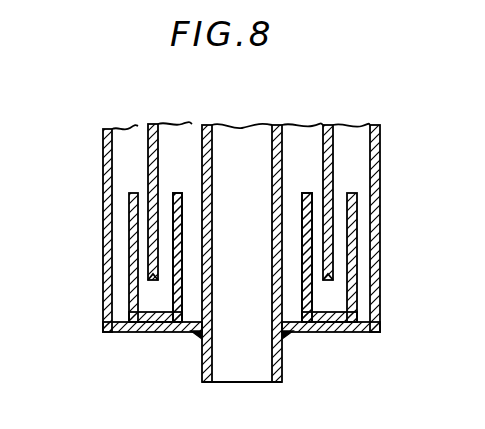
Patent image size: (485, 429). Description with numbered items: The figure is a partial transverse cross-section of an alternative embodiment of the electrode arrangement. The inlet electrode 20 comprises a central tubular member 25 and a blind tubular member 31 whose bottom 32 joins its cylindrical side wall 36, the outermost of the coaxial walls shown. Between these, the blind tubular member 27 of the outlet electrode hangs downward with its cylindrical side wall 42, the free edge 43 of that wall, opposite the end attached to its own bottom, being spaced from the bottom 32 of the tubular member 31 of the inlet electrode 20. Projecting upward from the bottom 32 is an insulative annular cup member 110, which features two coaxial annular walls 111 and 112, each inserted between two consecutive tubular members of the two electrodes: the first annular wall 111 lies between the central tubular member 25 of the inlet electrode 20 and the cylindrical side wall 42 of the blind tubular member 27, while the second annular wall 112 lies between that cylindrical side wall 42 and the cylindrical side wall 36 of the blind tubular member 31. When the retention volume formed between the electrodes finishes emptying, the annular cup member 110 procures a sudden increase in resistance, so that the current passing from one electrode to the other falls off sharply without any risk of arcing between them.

The inlet electrode 20 is at (96, 312).
The central tubular member 25 is at (286, 350).
The blind tubular member 27 is at (335, 122).
The tubular member 31 is at (119, 336).
The bottom 32 is at (162, 326).
The cylindrical side wall 36 is at (380, 272).
The cylindrical side wall 42 is at (337, 157).
The free edge 43 is at (333, 227).
The annular cup member 110 is at (127, 260).
The annular wall 111 is at (175, 228).
The annular wall 112 is at (130, 224).